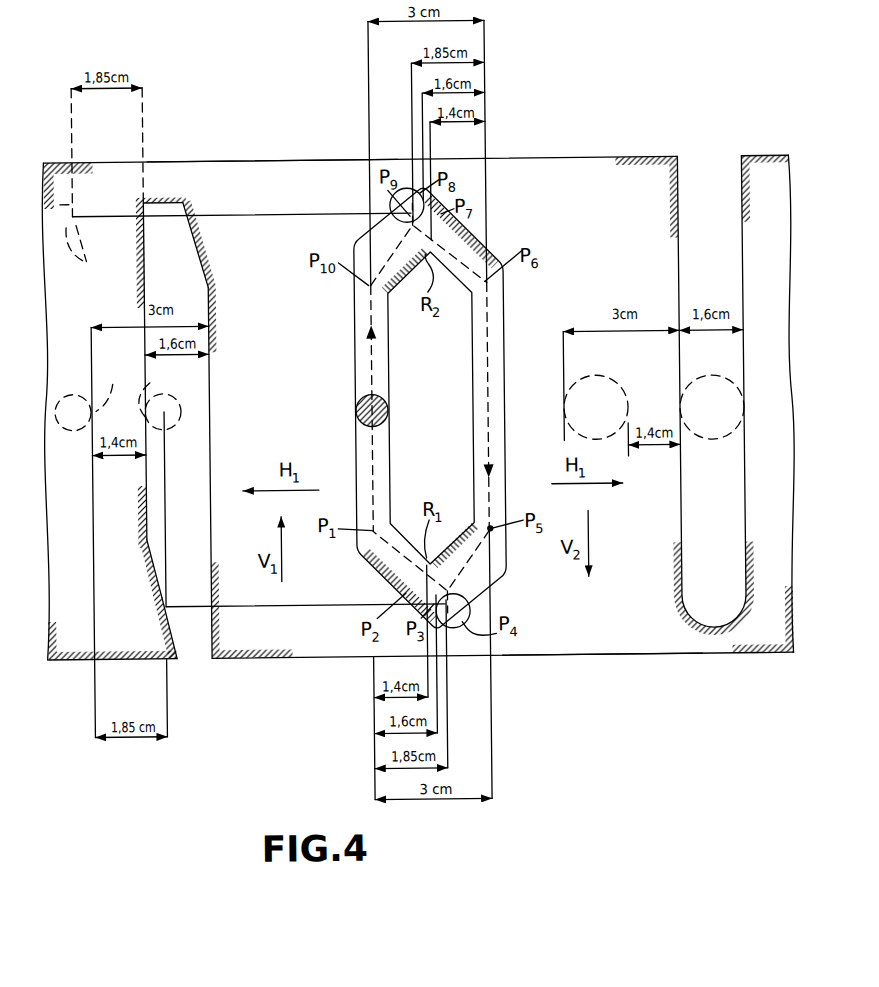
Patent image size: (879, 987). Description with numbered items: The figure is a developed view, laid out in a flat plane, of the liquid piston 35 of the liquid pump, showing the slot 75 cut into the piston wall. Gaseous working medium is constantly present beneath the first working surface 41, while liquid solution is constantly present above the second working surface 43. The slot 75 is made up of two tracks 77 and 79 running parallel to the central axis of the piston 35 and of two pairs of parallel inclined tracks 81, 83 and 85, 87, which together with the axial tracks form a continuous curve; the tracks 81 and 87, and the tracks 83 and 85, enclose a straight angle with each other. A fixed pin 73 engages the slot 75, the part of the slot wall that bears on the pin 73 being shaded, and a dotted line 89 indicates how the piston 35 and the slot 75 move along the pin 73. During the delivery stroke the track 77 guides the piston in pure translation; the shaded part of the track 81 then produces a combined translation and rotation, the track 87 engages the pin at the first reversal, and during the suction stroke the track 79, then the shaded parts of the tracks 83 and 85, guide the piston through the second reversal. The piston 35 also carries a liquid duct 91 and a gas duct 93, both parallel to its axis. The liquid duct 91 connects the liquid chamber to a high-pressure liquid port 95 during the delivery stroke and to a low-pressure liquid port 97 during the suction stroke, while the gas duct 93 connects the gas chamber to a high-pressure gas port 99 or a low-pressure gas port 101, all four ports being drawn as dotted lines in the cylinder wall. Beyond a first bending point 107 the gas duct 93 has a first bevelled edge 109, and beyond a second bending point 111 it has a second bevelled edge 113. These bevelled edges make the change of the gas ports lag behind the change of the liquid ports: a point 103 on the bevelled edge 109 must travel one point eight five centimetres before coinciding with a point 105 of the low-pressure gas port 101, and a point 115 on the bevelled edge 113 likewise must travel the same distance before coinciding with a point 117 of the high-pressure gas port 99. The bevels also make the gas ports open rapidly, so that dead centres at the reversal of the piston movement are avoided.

The piston 35 is at (587, 157).
The first working surface 41 is at (597, 657).
The second working surface 43 is at (264, 158).
The pin 73 is at (358, 412).
The slot 75 is at (352, 337).
The track 77 is at (365, 372).
The track 79 is at (505, 388).
The track 81 is at (397, 561).
The track 83 is at (478, 231).
The track 85 is at (385, 238).
The track 87 is at (472, 573).
The dotted line 89 is at (492, 318).
The liquid duct 91 is at (714, 263).
The gas duct 93 is at (180, 493).
The high-pressure liquid port 95 is at (716, 443).
The low-pressure liquid port 97 is at (563, 426).
The high-pressure gas port 99 is at (164, 428).
The low-pressure gas port 101 is at (64, 428).
The point 103 is at (158, 617).
The point 105 is at (112, 387).
The first bending point 107 is at (143, 542).
The first bevelled edge 109 is at (158, 594).
The second bending point 111 is at (214, 278).
The second bevelled edge 113 is at (193, 230).
The point 115 is at (189, 204).
The point 117 is at (148, 380).